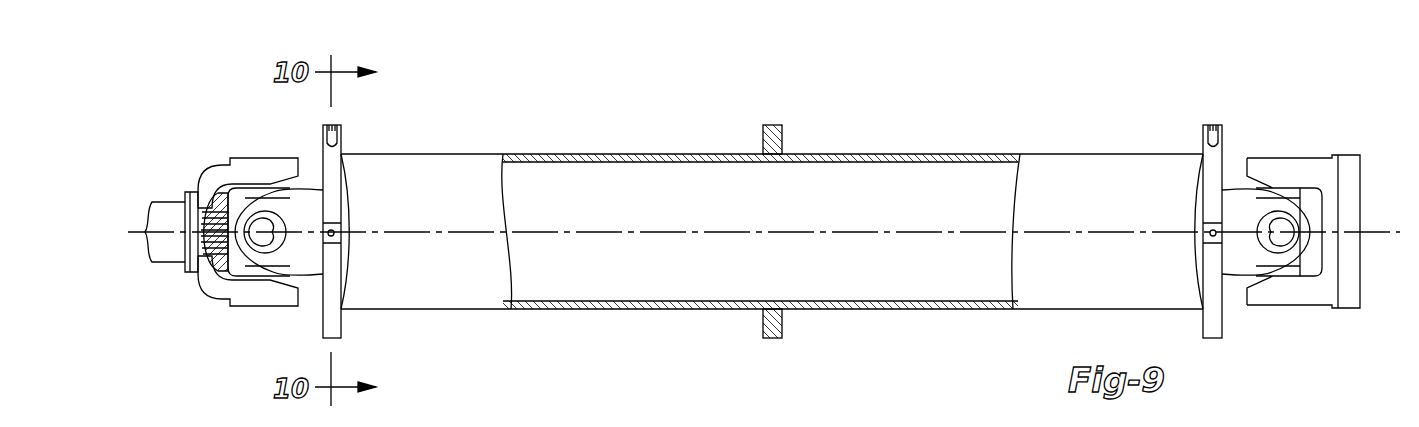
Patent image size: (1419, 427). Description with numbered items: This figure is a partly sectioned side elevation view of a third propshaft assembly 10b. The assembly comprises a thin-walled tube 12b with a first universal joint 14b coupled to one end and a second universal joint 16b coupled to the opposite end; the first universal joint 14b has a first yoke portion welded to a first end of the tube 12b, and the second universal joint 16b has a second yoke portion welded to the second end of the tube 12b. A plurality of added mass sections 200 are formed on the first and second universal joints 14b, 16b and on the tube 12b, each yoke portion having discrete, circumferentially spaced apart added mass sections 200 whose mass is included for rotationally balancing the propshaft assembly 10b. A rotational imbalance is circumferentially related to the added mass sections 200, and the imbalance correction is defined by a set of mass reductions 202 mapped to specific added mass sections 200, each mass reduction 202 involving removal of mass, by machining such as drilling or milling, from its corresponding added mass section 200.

The propshaft assembly 10b is at (858, 120).
The tube 12b is at (598, 309).
The first universal joint 14b is at (247, 152).
The second universal joint 16b is at (1307, 314).
The added mass sections 200 is at (343, 138).
The mass reductions 202 is at (324, 136).